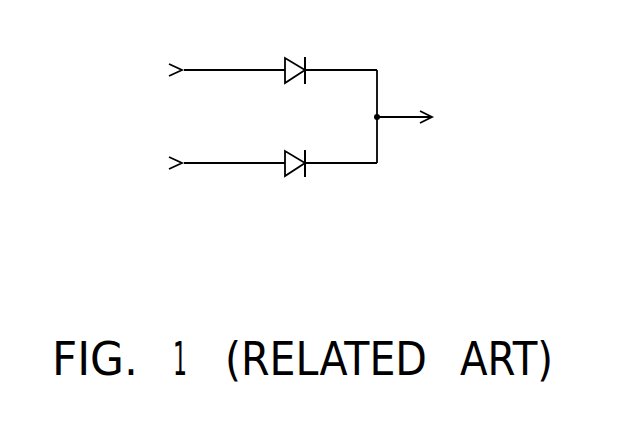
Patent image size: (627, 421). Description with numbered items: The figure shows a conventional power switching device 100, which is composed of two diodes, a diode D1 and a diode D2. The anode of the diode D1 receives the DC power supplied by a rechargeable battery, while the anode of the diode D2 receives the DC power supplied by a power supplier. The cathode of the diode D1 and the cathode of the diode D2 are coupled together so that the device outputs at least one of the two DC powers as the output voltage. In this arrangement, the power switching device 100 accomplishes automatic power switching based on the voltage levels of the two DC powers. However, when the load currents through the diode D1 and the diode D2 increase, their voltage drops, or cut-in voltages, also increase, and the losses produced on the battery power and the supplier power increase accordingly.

The power switching device 100 is at (362, 146).
The diode D1 is at (297, 52).
The diode D2 is at (299, 189).